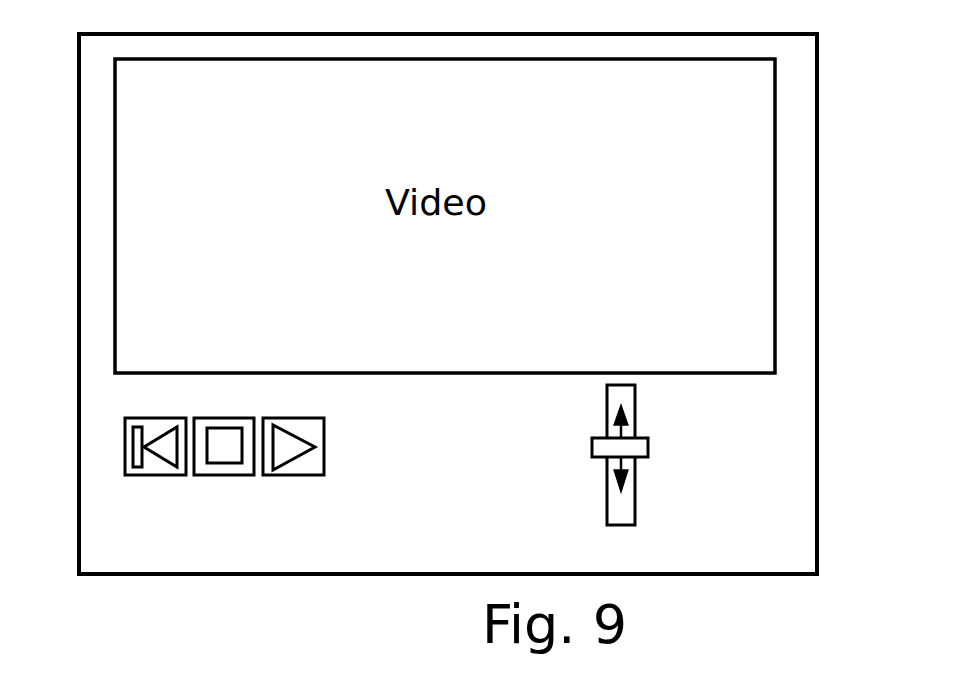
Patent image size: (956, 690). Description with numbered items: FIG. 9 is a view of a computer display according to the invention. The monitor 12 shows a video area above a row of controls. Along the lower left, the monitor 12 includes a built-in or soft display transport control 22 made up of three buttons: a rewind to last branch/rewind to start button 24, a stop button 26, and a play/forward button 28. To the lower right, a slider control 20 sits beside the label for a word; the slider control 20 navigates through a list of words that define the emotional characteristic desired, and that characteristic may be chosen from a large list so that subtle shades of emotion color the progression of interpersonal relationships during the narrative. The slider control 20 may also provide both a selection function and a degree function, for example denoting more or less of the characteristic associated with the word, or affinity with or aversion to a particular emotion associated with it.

The monitor 12 is at (812, 168).
The slider control 20 is at (635, 498).
The display transport control 22 is at (167, 451).
The rewind to last branch/rewind to start button 24 is at (125, 452).
The stop button 26 is at (203, 418).
The play/forward button 28 is at (315, 493).